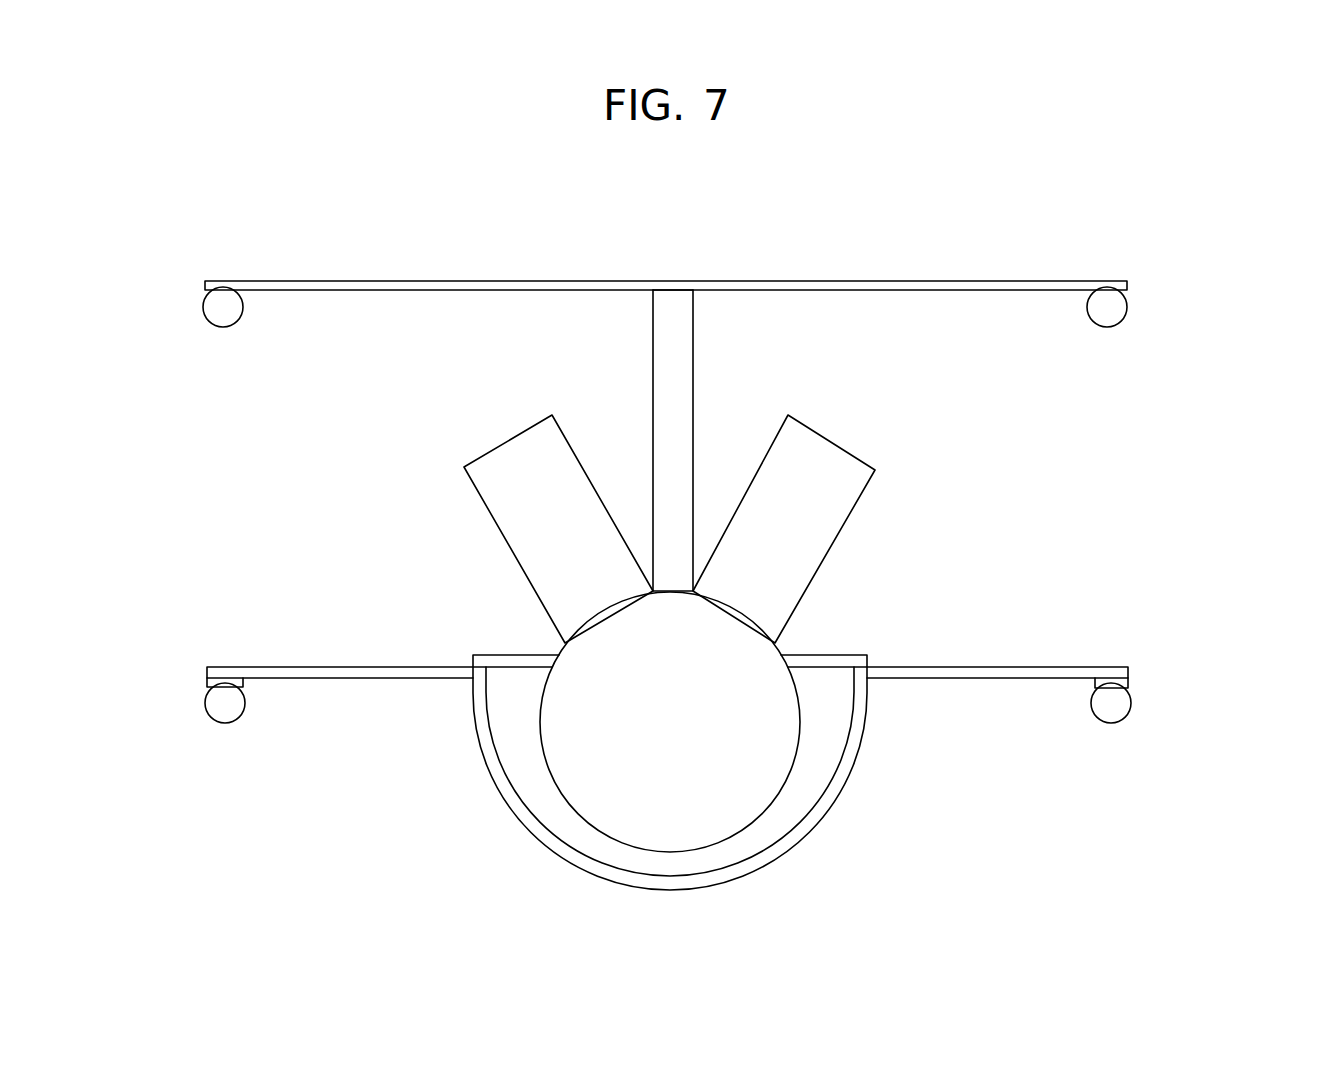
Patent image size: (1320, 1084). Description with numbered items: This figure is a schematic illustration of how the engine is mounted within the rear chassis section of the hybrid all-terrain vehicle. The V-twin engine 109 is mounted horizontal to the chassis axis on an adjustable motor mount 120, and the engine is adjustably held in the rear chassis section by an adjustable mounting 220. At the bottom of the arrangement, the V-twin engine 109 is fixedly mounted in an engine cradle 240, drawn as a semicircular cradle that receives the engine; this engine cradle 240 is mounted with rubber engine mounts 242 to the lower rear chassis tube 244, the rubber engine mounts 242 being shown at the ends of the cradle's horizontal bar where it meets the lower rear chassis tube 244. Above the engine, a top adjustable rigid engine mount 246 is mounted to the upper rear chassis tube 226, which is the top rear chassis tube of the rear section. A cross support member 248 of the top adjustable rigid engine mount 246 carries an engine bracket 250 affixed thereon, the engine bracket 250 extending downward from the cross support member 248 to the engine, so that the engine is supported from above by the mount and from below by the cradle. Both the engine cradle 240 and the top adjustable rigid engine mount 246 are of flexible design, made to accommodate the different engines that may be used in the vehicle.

The V-twin engine 109 is at (952, 518).
The adjustable motor mount 120 is at (873, 250).
The adjustable mounting 220 is at (530, 370).
The top rear chassis tube 226 is at (1128, 305).
The engine cradle 240 is at (380, 667).
The rubber engine mounts 242 is at (243, 682).
The lower rear chassis tube 244 is at (1113, 723).
The top adjustable rigid engine mount 246 is at (398, 280).
The cross support member 248 is at (683, 281).
The engine bracket 250 is at (695, 385).